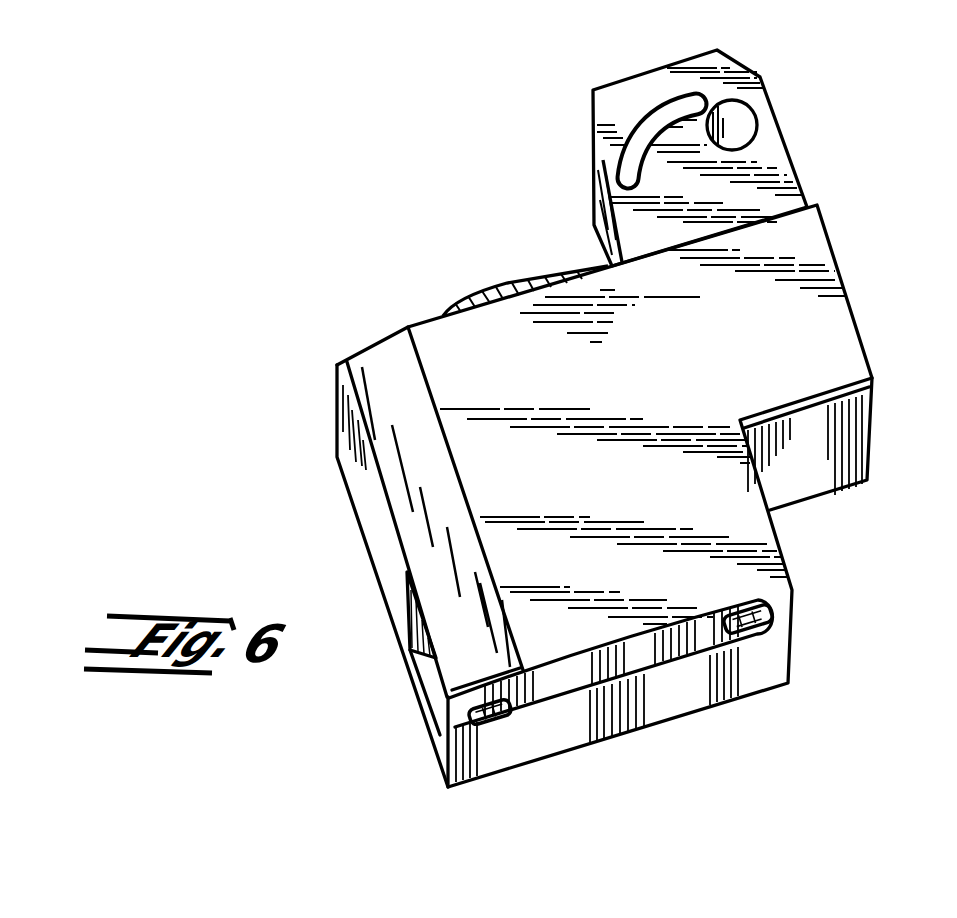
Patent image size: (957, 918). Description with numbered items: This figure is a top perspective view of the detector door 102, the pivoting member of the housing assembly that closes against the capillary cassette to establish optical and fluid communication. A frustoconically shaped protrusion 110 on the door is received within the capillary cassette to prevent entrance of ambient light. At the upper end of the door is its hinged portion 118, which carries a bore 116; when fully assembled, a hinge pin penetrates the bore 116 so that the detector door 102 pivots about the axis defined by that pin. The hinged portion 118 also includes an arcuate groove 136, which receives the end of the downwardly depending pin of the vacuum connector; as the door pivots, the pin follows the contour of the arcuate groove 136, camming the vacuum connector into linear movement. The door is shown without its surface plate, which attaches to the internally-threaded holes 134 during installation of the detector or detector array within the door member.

The detector door 102 is at (338, 306).
The frustoconically shaped protrusion 110 is at (513, 283).
The bore 116 is at (753, 117).
The hinged portion 118 is at (783, 157).
The internally-threaded holes 134 is at (765, 622).
The arcuate groove 136 is at (622, 160).